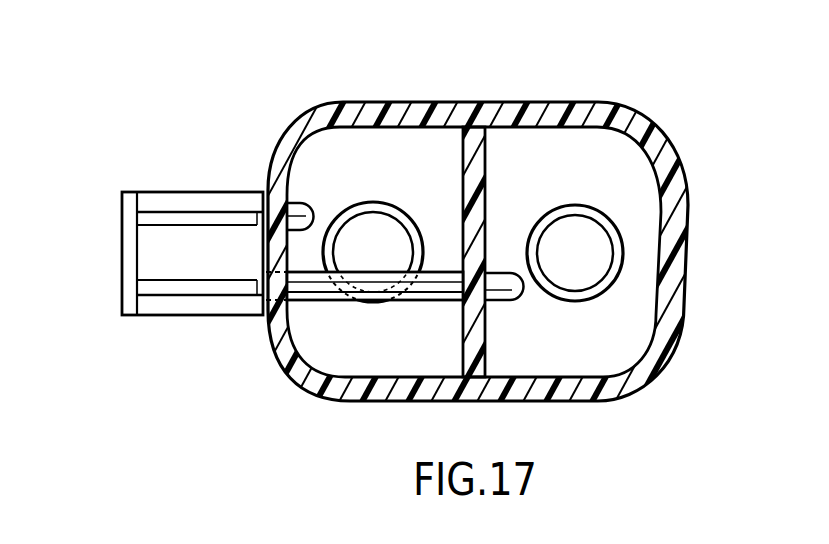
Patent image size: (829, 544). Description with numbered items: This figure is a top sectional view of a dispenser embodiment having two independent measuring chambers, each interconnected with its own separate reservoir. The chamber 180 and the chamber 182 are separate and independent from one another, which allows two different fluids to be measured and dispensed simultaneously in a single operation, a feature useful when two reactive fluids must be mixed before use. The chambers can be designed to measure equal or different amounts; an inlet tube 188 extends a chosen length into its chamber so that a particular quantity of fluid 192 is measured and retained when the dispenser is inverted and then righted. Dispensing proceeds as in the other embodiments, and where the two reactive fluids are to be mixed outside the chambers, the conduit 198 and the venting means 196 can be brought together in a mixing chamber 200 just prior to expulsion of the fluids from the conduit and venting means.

The chamber 180 is at (318, 168).
The chamber 182 is at (428, 138).
The inlet tube 188 is at (368, 226).
The fluid 192 is at (580, 218).
The venting means 196 is at (178, 292).
The conduit 198 is at (171, 208).
The mixing chamber 200 is at (122, 258).